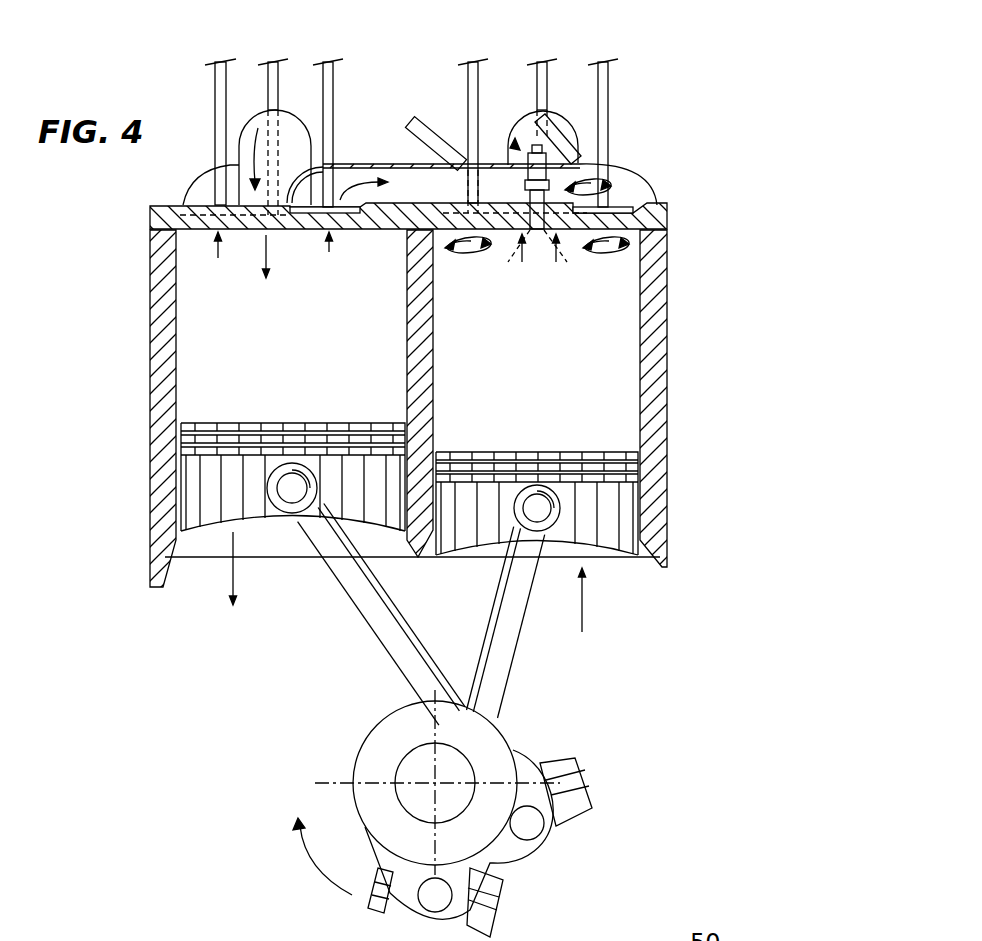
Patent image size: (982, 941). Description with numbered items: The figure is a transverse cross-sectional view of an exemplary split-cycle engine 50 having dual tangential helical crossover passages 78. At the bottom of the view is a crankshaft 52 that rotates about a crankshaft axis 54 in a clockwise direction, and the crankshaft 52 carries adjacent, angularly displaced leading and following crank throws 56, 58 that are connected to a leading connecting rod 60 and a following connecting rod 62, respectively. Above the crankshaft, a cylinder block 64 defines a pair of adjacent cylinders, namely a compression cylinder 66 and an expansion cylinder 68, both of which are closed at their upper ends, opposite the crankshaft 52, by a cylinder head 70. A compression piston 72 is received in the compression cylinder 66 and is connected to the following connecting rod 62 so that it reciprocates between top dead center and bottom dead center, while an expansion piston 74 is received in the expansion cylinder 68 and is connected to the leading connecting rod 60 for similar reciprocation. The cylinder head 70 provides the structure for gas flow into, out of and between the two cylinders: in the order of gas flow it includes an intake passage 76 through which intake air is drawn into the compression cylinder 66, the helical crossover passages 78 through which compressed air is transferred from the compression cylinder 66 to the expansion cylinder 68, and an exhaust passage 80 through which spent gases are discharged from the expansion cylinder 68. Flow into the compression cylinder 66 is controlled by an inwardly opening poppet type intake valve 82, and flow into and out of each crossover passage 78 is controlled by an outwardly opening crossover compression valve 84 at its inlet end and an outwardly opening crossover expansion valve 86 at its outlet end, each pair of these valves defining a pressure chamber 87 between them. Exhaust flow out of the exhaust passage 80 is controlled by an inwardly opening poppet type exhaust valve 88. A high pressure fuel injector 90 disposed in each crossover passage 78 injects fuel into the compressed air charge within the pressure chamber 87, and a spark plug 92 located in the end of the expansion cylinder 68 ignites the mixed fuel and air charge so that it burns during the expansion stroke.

The split-cycle engine 50 is at (155, 600).
The crankshaft 52 is at (380, 722).
The crankshaft axis 54 is at (432, 780).
The leading crank throw 56 is at (432, 907).
The following crank throw 58 is at (528, 840).
The leading connecting rod 60 is at (514, 668).
The following connecting rod 62 is at (376, 634).
The cylinder block 64 is at (133, 505).
The compression cylinder 66 is at (178, 327).
The expansion cylinder 68 is at (650, 322).
The cylinder head 70 is at (682, 213).
The compression piston 72 is at (198, 532).
The expansion piston 74 is at (603, 550).
The intake passage 76 is at (252, 115).
The tangential helical crossover passage 78 is at (200, 180).
The exhaust passage 80 is at (563, 133).
The intake valve 82 is at (280, 80).
The crossover compression valve 84 is at (215, 97).
The crossover expansion valve 86 is at (466, 78).
The pressure chamber 87 is at (397, 177).
The exhaust valve 88 is at (533, 77).
The high pressure fuel injector 90 is at (432, 128).
The spark plug 92 is at (536, 143).